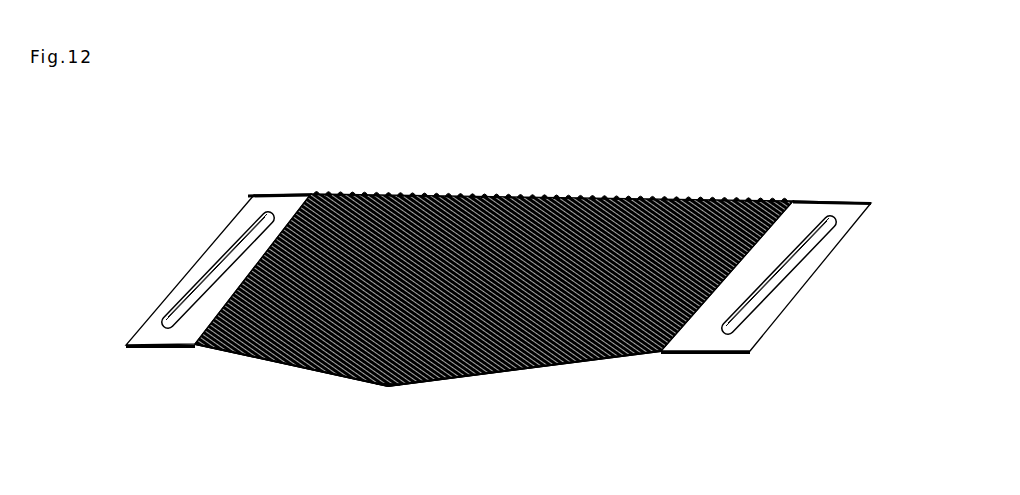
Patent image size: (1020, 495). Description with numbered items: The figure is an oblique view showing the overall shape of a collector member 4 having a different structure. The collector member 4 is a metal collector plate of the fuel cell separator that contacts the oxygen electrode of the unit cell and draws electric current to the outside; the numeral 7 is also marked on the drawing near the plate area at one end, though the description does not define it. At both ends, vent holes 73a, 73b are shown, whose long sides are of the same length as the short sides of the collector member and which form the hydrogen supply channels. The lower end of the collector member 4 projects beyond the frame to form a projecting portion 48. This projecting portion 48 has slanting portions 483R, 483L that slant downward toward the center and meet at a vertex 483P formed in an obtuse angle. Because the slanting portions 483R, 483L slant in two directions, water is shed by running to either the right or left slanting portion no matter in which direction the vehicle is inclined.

The collector member 4 is at (576, 168).
The support plate 7 is at (822, 172).
The vent hole 73a is at (783, 257).
The vent hole 73b is at (199, 279).
The projecting portion 48 is at (411, 388).
The slanting portion 483L is at (298, 365).
The vertex 483P is at (381, 380).
The slanting portion 483R is at (543, 360).